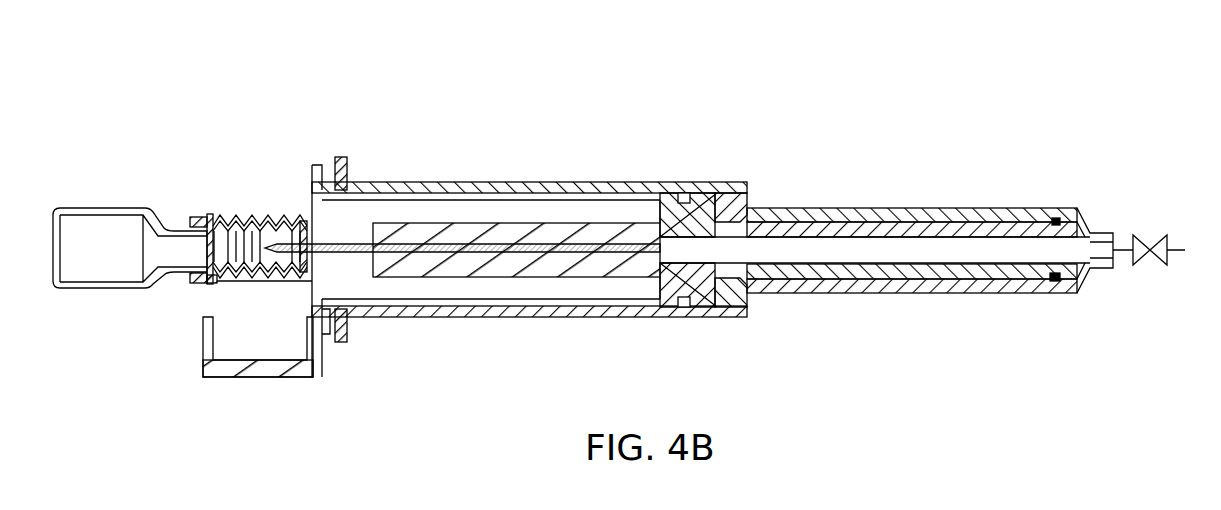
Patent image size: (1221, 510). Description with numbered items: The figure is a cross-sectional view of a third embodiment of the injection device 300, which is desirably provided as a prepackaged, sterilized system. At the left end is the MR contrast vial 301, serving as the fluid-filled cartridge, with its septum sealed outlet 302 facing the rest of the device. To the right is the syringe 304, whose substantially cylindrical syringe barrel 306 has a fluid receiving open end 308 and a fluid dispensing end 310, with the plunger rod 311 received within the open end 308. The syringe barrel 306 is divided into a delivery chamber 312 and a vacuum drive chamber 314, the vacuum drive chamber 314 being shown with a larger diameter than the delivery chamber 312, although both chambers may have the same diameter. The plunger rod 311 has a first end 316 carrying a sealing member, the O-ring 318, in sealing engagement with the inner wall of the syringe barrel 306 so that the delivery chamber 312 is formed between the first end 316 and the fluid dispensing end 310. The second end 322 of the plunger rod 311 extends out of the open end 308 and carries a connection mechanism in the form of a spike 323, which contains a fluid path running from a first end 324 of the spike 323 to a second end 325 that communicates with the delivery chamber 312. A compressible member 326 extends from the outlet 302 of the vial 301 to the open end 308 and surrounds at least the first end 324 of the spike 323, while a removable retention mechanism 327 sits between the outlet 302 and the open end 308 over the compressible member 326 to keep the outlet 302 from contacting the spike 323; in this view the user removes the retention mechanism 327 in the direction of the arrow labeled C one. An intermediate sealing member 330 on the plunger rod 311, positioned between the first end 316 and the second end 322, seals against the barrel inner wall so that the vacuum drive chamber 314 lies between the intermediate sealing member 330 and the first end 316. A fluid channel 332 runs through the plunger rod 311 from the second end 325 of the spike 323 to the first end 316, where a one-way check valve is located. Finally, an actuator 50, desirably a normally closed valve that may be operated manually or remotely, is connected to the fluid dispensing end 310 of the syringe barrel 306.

The injection device 300 is at (645, 72).
The MR contrast vial 301 is at (92, 213).
The septum sealed outlet 302 is at (209, 213).
The syringe 304 is at (603, 143).
The syringe barrel 306 is at (737, 192).
The open end 308 is at (352, 184).
The fluid dispensing end 310 is at (1115, 238).
The plunger rod 311 is at (856, 210).
The delivery chamber 312 is at (975, 212).
The vacuum drive chamber 314 is at (742, 205).
The first end 316 is at (1079, 214).
The O-ring 318 is at (1058, 226).
The second end 322 is at (312, 185).
The spike 323 is at (478, 262).
The first end 324 is at (272, 246).
The second end 325 is at (745, 303).
The compressible member 326 is at (218, 286).
The removable retention mechanism 327 is at (265, 378).
The intermediate sealing member 330 is at (684, 307).
The fluid channel 332 is at (943, 252).
The actuator 50 is at (1148, 262).